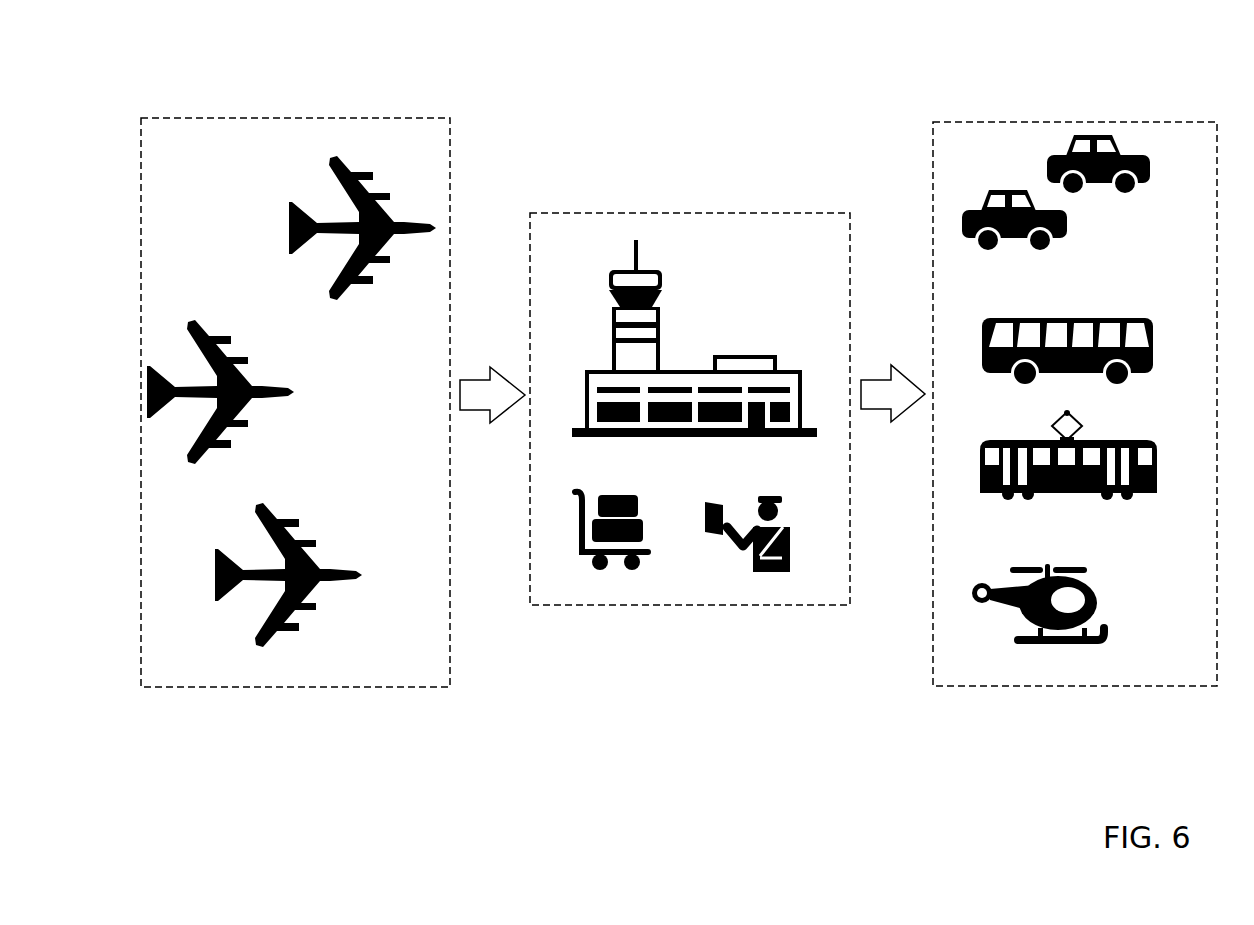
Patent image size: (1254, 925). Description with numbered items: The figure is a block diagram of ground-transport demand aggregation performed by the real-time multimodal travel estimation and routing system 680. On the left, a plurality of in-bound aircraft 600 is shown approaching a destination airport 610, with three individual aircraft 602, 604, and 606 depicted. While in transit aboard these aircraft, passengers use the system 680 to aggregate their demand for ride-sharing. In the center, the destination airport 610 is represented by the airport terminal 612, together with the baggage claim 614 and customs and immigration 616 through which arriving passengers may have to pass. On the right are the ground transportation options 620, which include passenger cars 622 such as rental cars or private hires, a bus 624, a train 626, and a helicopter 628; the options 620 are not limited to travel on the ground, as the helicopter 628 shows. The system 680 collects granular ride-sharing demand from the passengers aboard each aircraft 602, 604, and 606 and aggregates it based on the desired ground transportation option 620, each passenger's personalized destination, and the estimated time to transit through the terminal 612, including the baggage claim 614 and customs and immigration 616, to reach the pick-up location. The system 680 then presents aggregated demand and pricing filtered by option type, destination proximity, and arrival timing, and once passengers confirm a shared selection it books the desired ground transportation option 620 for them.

The real-time multimodal travel estimation and routing system 680 is at (1183, 52).
The plurality of in-bound aircraft 600 is at (392, 117).
The aircraft 602 is at (292, 207).
The aircraft 604 is at (290, 378).
The aircraft 606 is at (338, 566).
The destination airport 610 is at (797, 212).
The airport terminal 612 is at (732, 355).
The baggage claim 614 is at (609, 492).
The customs and immigration 616 is at (773, 495).
The ground transportation options 620 is at (1187, 122).
The passenger cars 622 is at (1070, 236).
The bus 624 is at (1143, 316).
The train 626 is at (1141, 440).
The helicopter 628 is at (1086, 569).